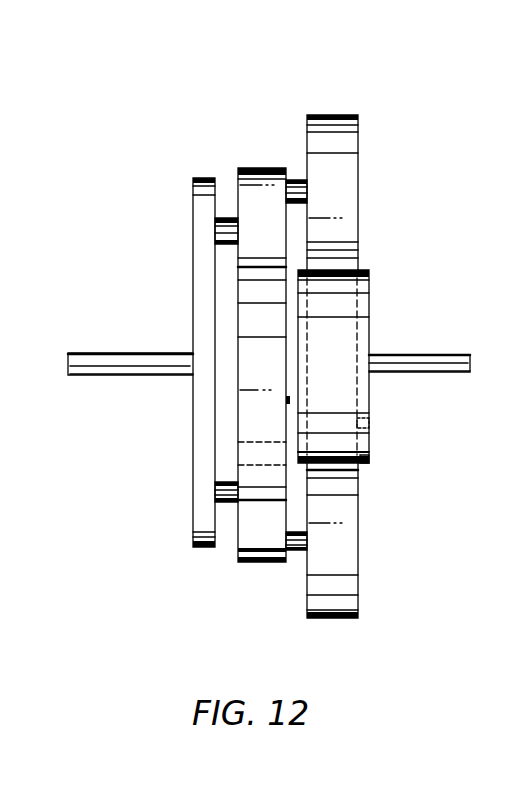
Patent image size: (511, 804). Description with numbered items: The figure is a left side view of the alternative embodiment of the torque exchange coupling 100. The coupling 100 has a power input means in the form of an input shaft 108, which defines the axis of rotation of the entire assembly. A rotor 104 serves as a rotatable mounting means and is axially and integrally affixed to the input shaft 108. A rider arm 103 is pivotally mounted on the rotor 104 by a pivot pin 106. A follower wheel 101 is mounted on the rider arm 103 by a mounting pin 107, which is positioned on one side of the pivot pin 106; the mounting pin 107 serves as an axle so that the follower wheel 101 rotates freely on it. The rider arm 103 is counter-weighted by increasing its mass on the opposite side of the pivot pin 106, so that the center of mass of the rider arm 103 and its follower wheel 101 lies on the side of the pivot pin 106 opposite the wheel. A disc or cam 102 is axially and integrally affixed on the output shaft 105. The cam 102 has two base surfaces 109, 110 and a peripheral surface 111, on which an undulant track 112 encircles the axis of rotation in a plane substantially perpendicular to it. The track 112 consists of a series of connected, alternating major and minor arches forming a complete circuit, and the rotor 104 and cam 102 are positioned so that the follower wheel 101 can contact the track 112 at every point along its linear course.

The coupling 100 is at (358, 48).
The follower wheel 101 is at (358, 180).
The disc or cam 102 is at (368, 290).
The rider arm 103 is at (242, 547).
The rotor 104 is at (202, 403).
The output shaft 105 is at (450, 373).
The pivot pin 106 is at (230, 218).
The mounting pin 107 is at (297, 182).
The input shaft 108 is at (133, 360).
The base surface 109 is at (374, 322).
The base surface 110 is at (283, 400).
The peripheral surface 111 is at (362, 463).
The undulant track 112 is at (366, 422).